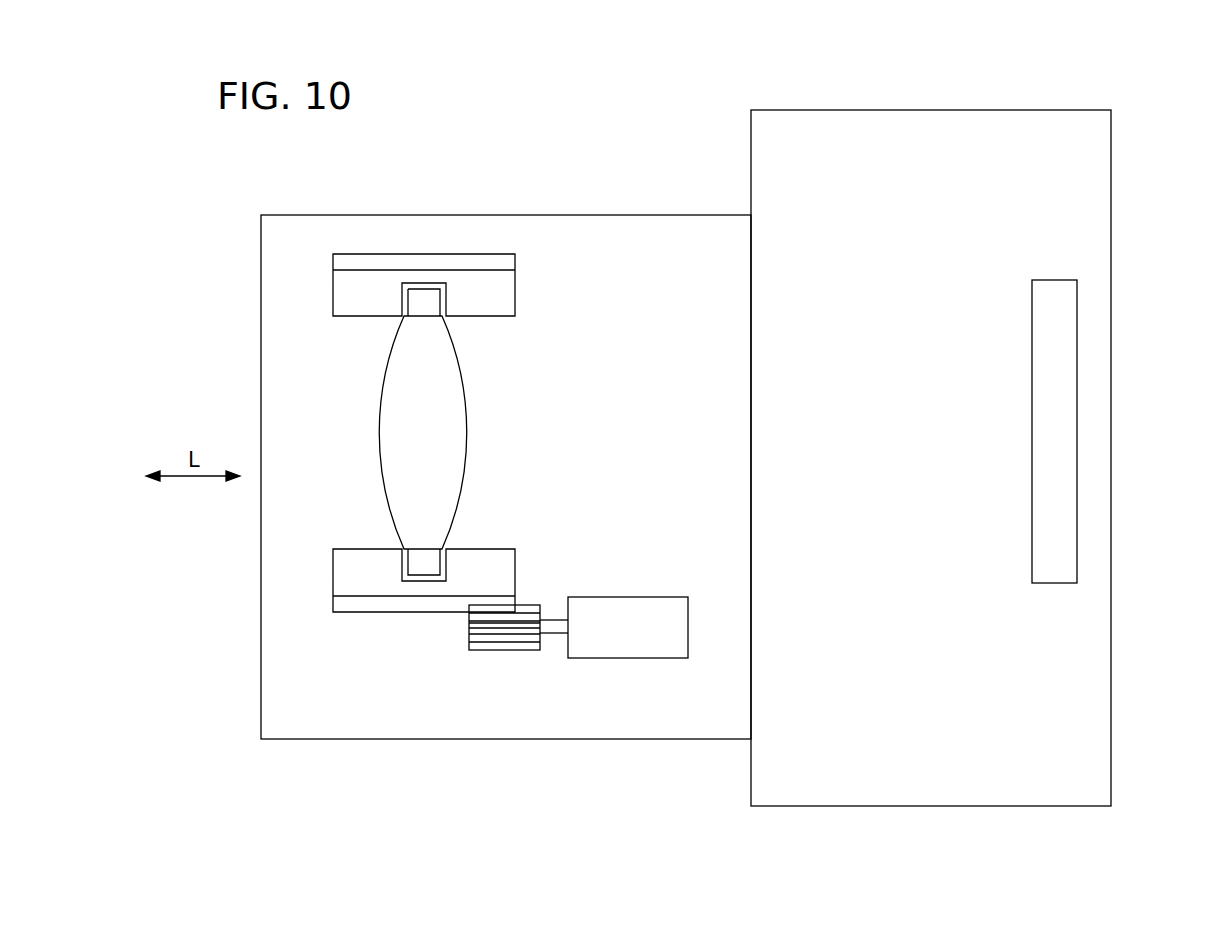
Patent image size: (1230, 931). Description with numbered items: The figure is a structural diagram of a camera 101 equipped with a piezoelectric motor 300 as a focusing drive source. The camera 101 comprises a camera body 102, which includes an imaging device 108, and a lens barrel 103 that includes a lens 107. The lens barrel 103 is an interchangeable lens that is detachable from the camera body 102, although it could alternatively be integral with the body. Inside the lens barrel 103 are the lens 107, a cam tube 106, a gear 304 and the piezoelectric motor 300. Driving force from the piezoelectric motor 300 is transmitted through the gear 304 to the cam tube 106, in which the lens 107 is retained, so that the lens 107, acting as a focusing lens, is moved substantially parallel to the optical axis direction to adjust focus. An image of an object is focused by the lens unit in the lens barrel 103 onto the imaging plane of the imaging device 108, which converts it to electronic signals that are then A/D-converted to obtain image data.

The camera 101 is at (1162, 170).
The camera body 102 is at (960, 790).
The lens barrel 103 is at (658, 237).
The cam tube 106 is at (364, 600).
The lens 107 is at (455, 433).
The imaging device 108 is at (1040, 418).
The piezoelectric motor 300 is at (638, 578).
The gear 304 is at (507, 637).